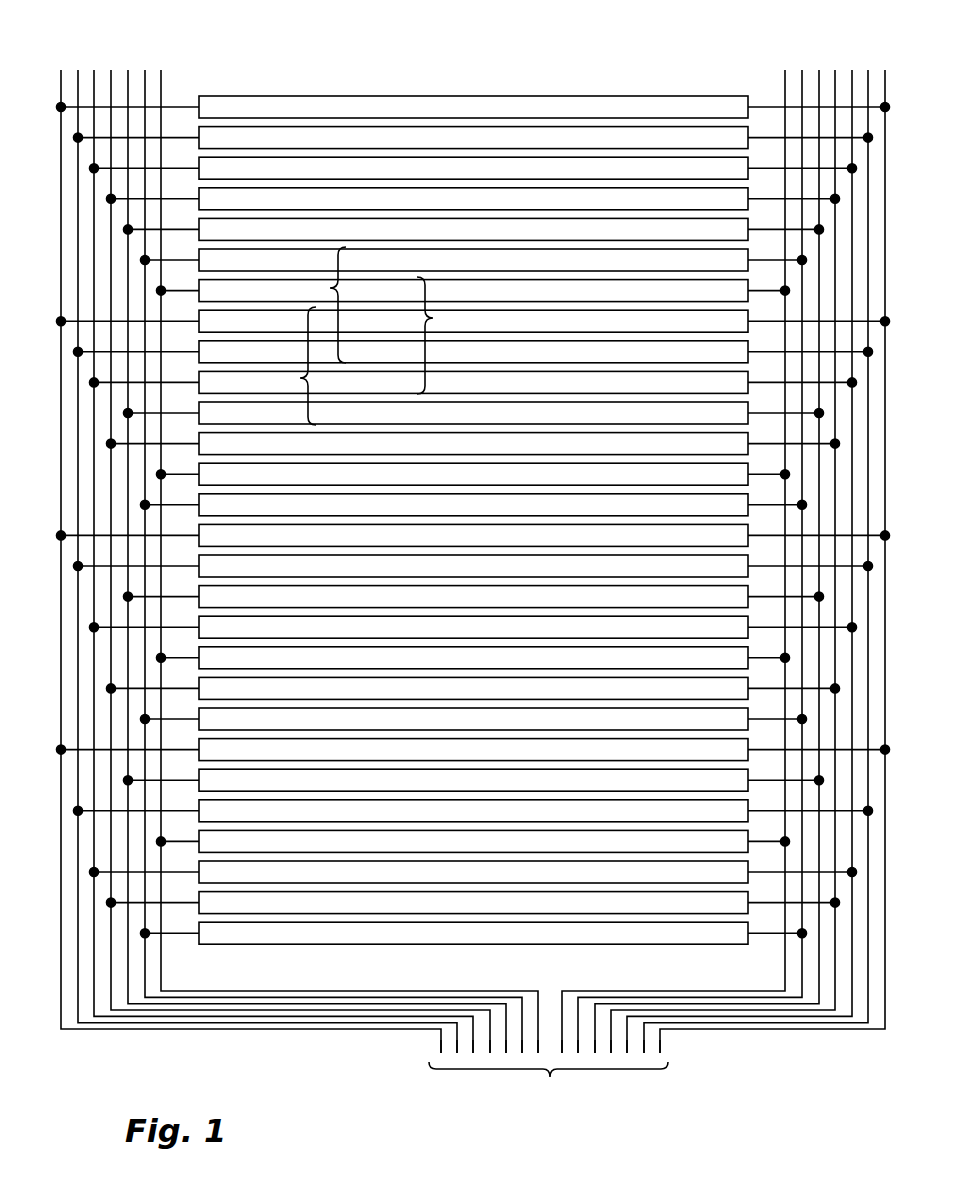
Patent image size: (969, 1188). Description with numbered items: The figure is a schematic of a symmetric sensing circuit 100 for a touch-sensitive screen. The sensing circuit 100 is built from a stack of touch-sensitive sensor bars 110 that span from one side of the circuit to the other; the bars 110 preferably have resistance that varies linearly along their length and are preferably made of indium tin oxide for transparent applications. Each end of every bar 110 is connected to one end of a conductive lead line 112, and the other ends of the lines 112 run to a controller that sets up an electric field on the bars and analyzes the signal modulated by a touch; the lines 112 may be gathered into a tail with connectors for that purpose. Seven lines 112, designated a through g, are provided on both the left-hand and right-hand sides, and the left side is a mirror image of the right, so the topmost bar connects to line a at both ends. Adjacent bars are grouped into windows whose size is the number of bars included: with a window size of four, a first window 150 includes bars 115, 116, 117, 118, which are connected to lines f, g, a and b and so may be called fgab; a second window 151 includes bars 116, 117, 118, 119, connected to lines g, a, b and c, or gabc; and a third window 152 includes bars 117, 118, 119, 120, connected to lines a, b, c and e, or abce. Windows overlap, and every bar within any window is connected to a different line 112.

The sensing circuit 100 is at (414, 56).
The touch-sensitive sensor bars 110 is at (407, 809).
The conductive lead lines 112 is at (548, 1074).
The bar 115 is at (366, 269).
The bar 116 is at (366, 300).
The bar 117 is at (366, 330).
The bar 118 is at (366, 361).
The bar 119 is at (366, 391).
The bar 120 is at (366, 422).
The first window 150 is at (320, 305).
The second window 151 is at (443, 335).
The third window 152 is at (289, 366).